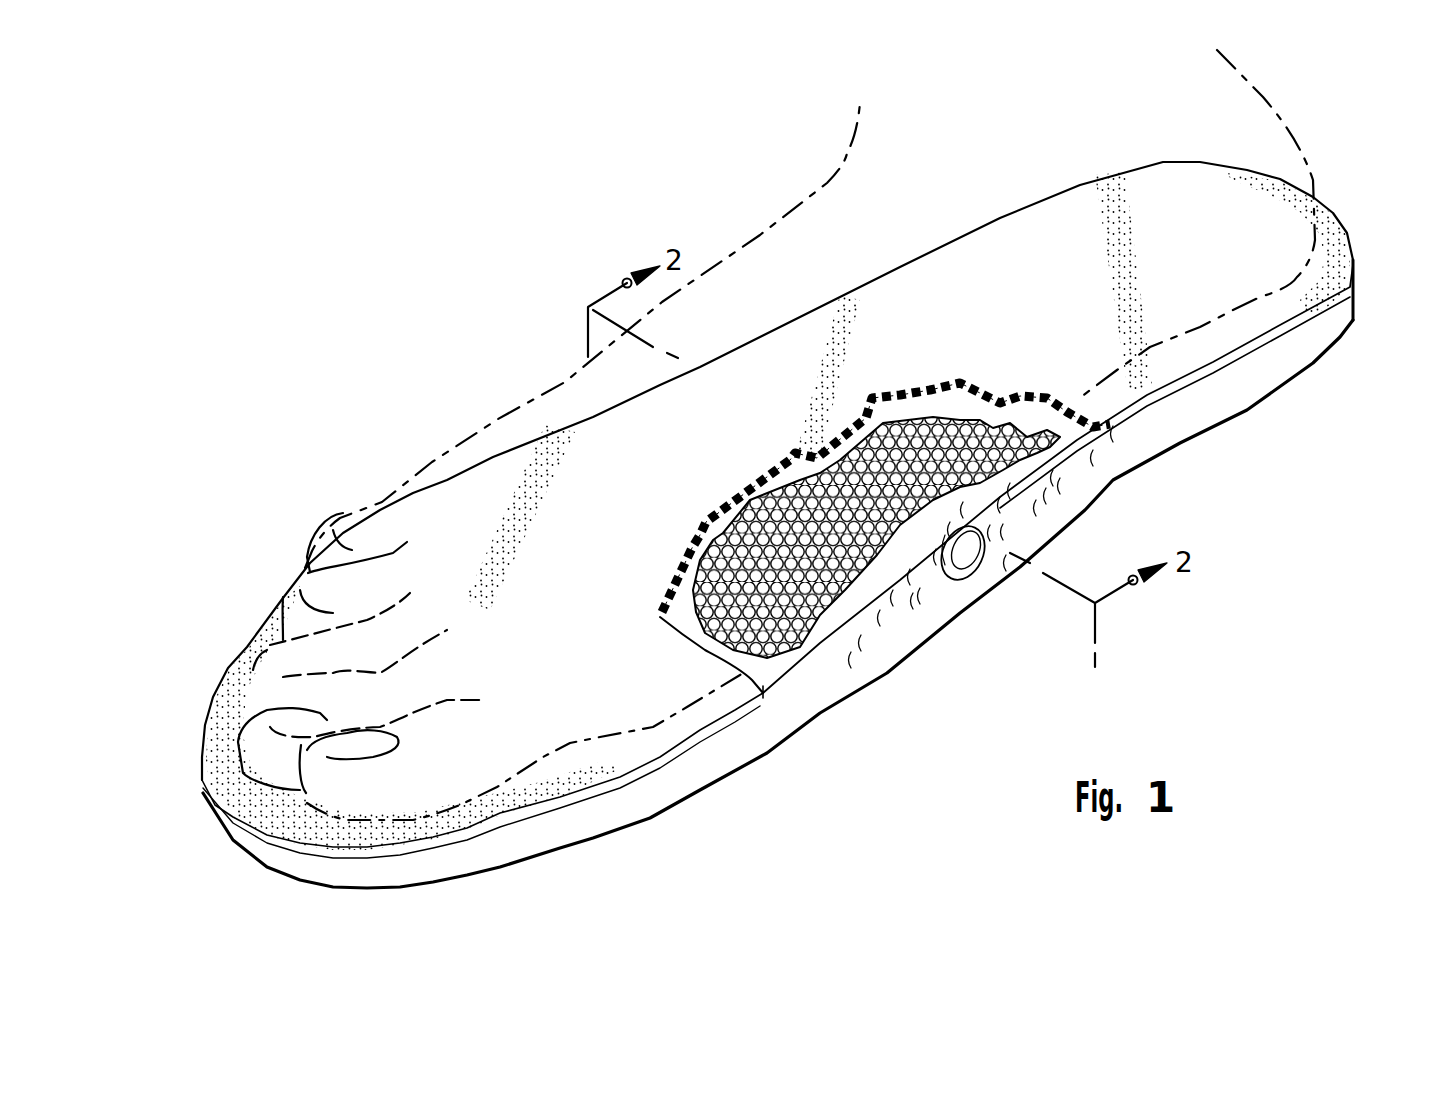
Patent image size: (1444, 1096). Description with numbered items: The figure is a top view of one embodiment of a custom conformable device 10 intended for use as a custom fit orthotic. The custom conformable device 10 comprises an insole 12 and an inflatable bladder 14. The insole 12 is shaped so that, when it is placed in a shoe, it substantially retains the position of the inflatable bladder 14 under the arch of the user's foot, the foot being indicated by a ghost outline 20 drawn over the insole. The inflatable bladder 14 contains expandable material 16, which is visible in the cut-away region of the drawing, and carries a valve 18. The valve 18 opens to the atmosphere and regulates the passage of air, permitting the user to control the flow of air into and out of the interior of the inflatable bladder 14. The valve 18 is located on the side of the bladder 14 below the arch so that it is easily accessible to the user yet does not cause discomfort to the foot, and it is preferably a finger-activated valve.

The custom conformable device 10 is at (1307, 400).
The insole 12 is at (210, 662).
The inflatable bladder 14 is at (783, 627).
The expandable material 16 is at (1030, 453).
The valve 18 is at (968, 560).
The ghost outline 20 is at (1293, 127).